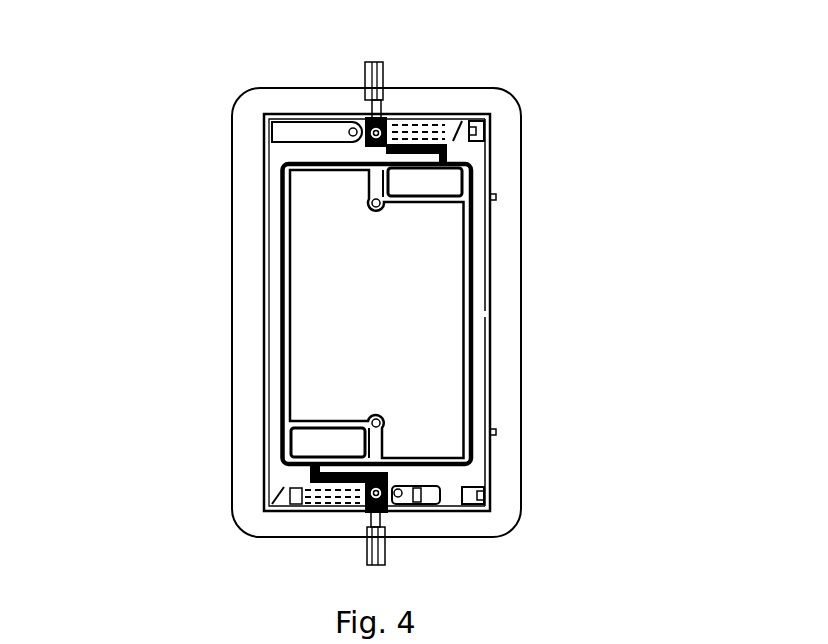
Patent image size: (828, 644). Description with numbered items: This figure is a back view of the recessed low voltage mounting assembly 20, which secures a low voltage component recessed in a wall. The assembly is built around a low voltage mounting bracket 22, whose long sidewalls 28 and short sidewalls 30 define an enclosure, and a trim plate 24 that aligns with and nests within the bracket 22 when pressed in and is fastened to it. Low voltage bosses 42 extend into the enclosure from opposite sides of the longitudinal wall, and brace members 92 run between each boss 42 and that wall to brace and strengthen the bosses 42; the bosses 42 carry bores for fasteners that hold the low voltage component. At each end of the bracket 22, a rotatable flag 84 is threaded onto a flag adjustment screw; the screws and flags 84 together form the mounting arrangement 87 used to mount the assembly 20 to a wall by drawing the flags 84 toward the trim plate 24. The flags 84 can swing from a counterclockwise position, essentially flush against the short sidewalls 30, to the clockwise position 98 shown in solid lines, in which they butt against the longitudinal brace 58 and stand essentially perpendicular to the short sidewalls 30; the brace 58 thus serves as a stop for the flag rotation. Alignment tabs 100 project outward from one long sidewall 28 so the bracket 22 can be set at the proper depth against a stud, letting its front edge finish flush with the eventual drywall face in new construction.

The recessed low voltage mounting assembly 20 is at (138, 190).
The low voltage mounting bracket 22 is at (277, 114).
The trim plate 24 is at (512, 532).
The long sidewalls 28 is at (490, 258).
The short sidewalls 30 is at (473, 116).
The low voltage bosses 42 is at (374, 213).
The longitudinal brace 58 is at (365, 114).
The flags 84 is at (376, 61).
The mounting arrangement 87 is at (347, 44).
The brace members 92 is at (440, 118).
The clockwise position 98 is at (433, 123).
The alignment tabs 100 is at (497, 197).